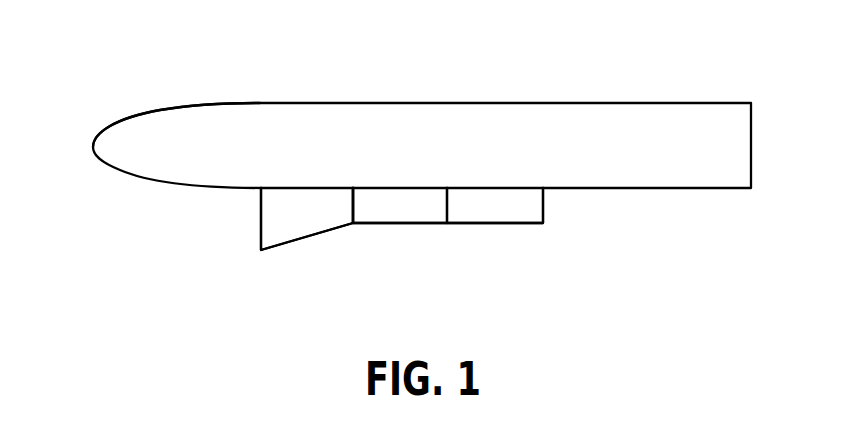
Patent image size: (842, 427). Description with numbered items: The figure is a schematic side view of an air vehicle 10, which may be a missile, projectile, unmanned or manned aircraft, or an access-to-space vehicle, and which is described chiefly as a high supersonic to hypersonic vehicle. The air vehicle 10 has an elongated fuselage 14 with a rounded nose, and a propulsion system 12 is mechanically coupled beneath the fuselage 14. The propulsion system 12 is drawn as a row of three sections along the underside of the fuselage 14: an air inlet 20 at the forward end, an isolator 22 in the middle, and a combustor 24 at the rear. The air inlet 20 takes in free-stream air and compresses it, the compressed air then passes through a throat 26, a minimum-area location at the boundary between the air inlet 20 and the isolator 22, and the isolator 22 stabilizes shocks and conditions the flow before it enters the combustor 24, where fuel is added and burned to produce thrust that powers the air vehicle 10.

The air vehicle 10 is at (120, 92).
The propulsion system 12 is at (245, 258).
The fuselage 14 is at (150, 155).
The air inlet 20 is at (308, 212).
The isolator 22 is at (405, 212).
The combustor 24 is at (497, 212).
The throat 26 is at (353, 200).